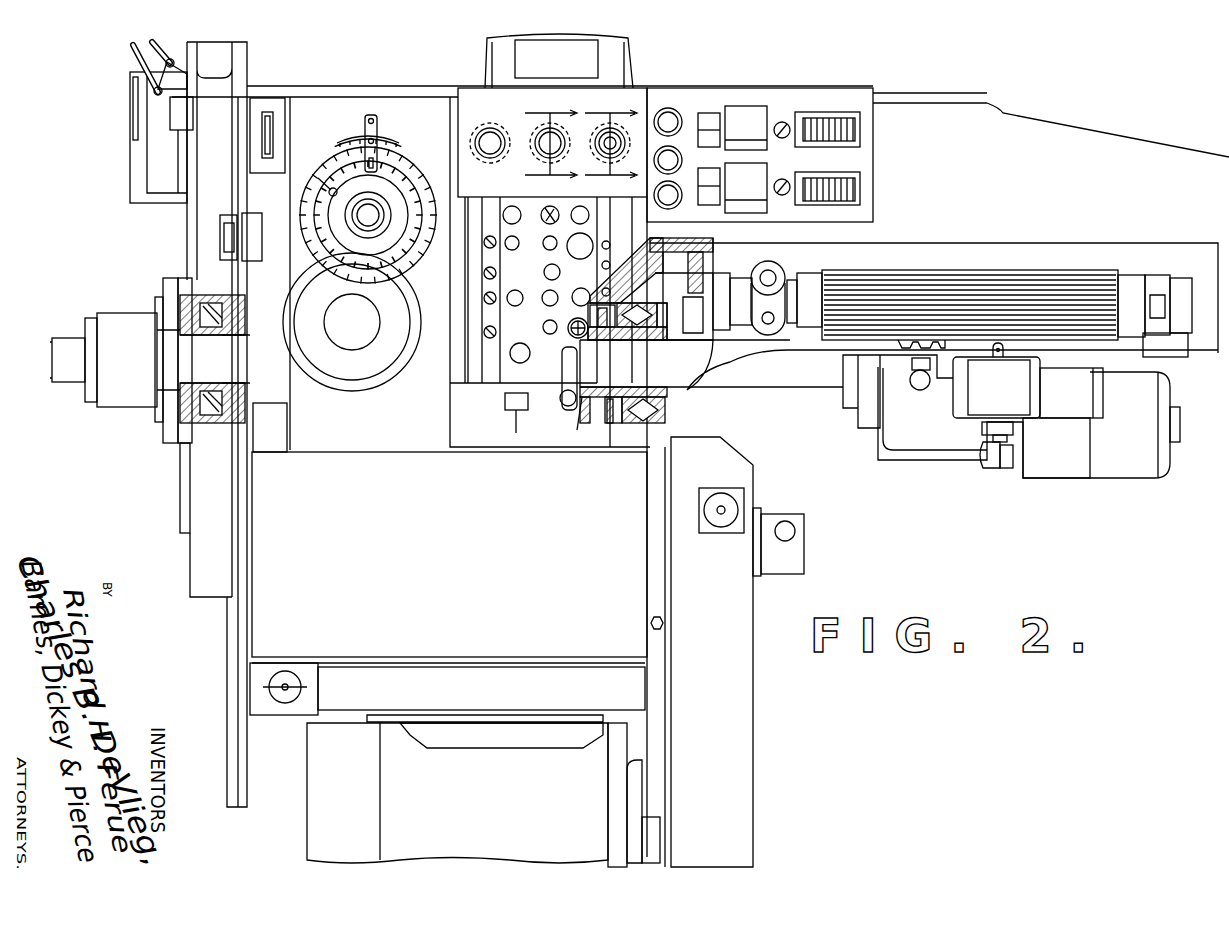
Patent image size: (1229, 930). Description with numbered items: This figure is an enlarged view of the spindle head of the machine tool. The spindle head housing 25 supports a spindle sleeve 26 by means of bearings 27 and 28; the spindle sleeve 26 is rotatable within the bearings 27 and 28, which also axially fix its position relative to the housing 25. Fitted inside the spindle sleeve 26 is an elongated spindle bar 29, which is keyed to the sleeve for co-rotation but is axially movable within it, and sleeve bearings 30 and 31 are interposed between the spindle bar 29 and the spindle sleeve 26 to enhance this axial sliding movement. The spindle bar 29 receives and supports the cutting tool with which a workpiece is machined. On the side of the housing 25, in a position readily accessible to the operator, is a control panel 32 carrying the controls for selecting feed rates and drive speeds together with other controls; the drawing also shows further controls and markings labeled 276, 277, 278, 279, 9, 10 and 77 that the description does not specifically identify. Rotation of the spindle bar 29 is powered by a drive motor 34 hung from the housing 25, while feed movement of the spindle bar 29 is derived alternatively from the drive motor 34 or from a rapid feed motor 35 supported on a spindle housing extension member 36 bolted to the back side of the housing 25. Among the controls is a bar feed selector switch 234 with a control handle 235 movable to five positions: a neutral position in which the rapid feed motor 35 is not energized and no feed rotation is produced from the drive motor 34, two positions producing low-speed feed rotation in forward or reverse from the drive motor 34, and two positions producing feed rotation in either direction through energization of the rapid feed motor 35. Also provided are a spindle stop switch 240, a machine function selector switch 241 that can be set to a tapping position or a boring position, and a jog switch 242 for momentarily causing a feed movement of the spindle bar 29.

The feed selector knob 9 is at (551, 144).
The speed selector knob 10 is at (611, 144).
The spindle head housing 25 is at (417, 535).
The spindle sleeve 26 is at (237, 308).
The bearing 27 is at (217, 297).
The bearing 28 is at (627, 427).
The spindle bar 29 is at (65, 338).
The sleeve bearing 30 is at (197, 347).
The sleeve bearing 31 is at (652, 340).
The control panel 32 is at (518, 365).
The drive motor 34 is at (505, 808).
The rapid feed motor 35 is at (1130, 460).
The spindle housing extension member 36 is at (1070, 148).
The control panel 77 is at (473, 96).
The bar feed selector switch 234 is at (552, 360).
The control handle 235 is at (577, 406).
The spindle stop switch 240 is at (510, 356).
The machine function selector switch 241 is at (482, 347).
The jog switch 242 is at (574, 318).
The knob 276 is at (614, 136).
The knob 277 is at (490, 132).
The opening 278 is at (512, 206).
The screw opening 279 is at (550, 224).